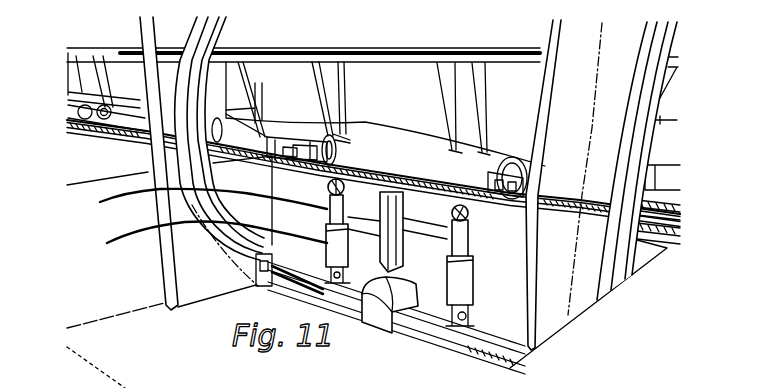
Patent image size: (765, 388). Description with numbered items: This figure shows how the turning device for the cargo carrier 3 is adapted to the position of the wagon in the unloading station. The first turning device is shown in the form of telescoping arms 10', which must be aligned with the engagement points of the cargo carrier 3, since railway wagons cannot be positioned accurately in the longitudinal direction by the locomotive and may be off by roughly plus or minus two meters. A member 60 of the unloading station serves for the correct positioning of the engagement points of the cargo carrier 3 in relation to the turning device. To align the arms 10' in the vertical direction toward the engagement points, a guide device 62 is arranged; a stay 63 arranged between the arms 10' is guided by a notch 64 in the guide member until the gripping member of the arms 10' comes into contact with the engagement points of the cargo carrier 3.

The cargo carrier 3 is at (405, 110).
The telescoping arms 10' is at (373, 247).
The member for correct positioning 60 is at (388, 312).
The guide device 62 is at (206, 231).
The stay 63 is at (193, 207).
The notch 64 is at (403, 220).